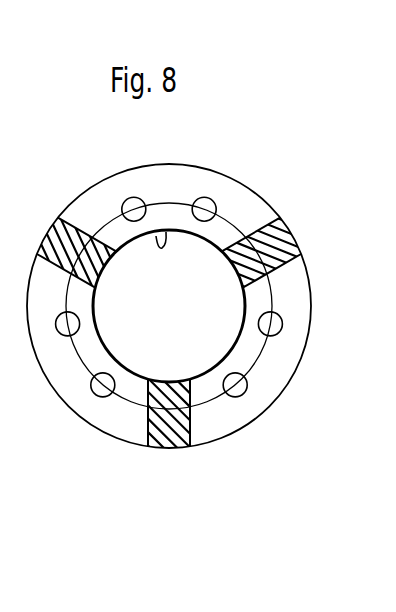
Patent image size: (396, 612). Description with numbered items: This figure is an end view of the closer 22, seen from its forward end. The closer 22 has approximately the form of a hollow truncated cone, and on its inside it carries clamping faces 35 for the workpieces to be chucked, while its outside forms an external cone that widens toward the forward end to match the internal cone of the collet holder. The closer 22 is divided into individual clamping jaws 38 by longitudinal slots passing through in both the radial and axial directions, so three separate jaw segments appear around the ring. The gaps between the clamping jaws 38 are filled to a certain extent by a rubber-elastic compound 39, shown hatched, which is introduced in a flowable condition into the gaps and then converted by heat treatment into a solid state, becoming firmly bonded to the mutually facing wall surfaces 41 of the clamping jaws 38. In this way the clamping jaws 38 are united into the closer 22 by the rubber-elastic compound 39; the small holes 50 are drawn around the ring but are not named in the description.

The closer 22 is at (225, 157).
The clamping faces 35 is at (156, 240).
The clamping jaws 38 is at (253, 205).
The rubber-elastic compound 39 is at (277, 245).
The wall surfaces 41 is at (190, 412).
The bores / holes 50 is at (271, 326).